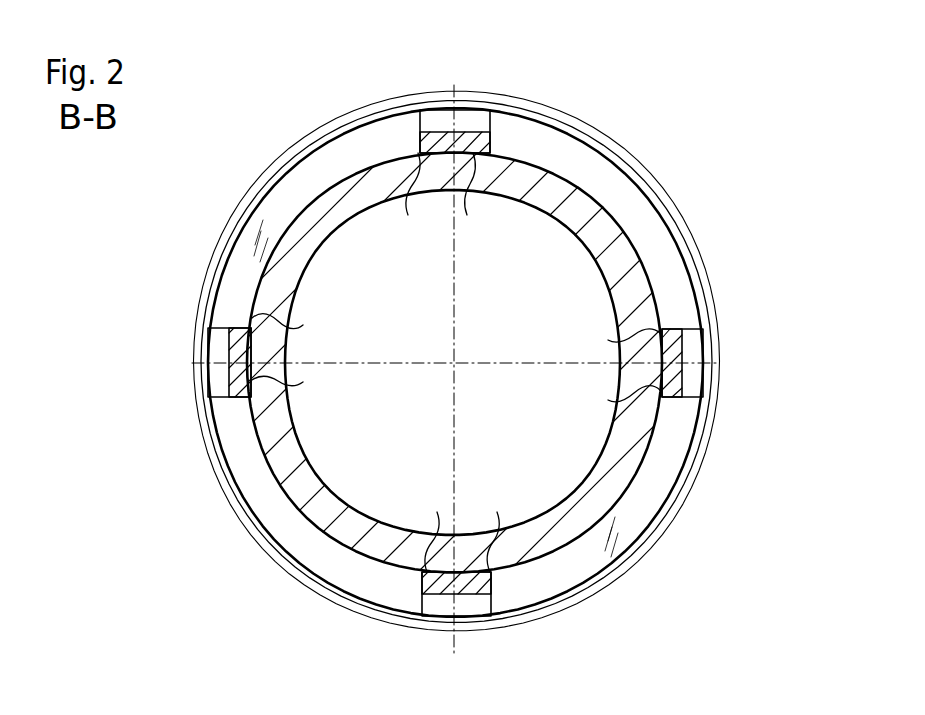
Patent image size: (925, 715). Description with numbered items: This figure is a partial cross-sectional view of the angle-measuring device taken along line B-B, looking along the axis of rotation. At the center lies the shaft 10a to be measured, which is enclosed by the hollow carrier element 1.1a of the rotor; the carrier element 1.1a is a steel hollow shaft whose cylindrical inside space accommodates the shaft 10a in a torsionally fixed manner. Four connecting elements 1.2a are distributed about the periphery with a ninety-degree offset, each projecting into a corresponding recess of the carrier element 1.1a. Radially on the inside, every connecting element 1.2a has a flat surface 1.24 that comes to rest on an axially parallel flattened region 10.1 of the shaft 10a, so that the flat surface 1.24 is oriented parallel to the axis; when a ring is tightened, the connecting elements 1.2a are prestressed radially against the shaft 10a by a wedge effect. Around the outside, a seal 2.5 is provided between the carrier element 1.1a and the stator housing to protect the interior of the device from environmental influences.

The carrier element 1.1a is at (245, 239).
The connecting element 1.2a is at (472, 118).
The flat surface 1.24 is at (456, 362).
The seal 2.5 is at (266, 548).
The shaft 10a is at (360, 212).
The flattened region 10.1 is at (456, 362).